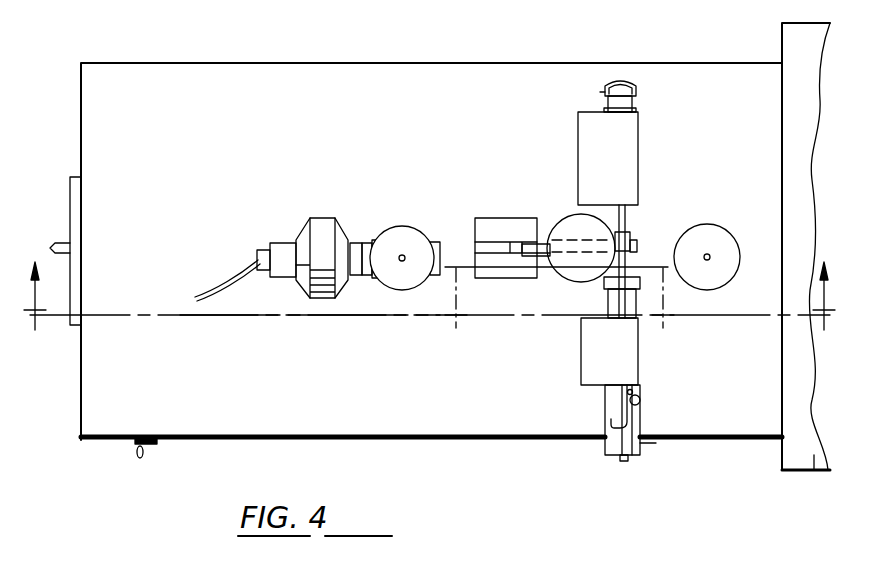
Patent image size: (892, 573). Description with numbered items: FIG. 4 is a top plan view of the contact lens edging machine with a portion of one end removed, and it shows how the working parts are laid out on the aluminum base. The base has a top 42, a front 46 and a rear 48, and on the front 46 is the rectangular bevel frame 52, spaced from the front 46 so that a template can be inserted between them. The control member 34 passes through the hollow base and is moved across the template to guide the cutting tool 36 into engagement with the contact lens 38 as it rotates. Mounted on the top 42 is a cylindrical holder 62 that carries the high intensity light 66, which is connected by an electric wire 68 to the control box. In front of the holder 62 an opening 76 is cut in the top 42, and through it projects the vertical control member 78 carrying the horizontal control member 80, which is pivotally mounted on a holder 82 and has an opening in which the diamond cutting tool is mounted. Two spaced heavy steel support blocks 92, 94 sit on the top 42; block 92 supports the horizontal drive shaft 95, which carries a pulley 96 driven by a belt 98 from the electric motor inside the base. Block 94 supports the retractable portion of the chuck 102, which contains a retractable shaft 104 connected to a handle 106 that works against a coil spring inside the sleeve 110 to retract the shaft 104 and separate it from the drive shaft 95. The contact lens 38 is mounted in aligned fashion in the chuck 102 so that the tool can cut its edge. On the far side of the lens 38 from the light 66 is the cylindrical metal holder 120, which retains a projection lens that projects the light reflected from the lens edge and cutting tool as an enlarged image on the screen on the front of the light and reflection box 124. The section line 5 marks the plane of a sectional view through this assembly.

The section line 5- 5 is at (824, 268).
The control member 34 is at (58, 243).
The cutting tool 36 is at (634, 246).
The contact lens 38 is at (630, 235).
The top 42 is at (302, 366).
The front 46 is at (81, 412).
The rear 48 is at (783, 418).
The rectangular bevel frame 52 is at (70, 200).
The cylindrical holder 62 is at (398, 228).
The high intensity light 66 is at (325, 228).
The electric wire 68 is at (222, 268).
The opening 76 is at (500, 218).
The vertical control member 78 is at (522, 243).
The horizontal control member 80 is at (540, 258).
The holder 82 is at (582, 280).
The support block 92 is at (627, 140).
The support block 94 is at (634, 349).
The horizontal drive shaft 95 is at (617, 80).
The pulley 96 is at (625, 100).
The belt 98 is at (608, 90).
The chuck 102 is at (645, 442).
The retractable shaft 104 is at (621, 462).
The handle 106 is at (640, 398).
The sleeve 110 is at (638, 428).
The cylindrical metal holder 120 is at (705, 235).
The light and reflection box 124 is at (812, 455).